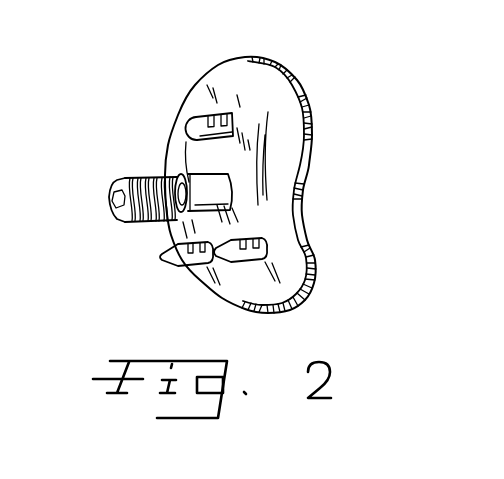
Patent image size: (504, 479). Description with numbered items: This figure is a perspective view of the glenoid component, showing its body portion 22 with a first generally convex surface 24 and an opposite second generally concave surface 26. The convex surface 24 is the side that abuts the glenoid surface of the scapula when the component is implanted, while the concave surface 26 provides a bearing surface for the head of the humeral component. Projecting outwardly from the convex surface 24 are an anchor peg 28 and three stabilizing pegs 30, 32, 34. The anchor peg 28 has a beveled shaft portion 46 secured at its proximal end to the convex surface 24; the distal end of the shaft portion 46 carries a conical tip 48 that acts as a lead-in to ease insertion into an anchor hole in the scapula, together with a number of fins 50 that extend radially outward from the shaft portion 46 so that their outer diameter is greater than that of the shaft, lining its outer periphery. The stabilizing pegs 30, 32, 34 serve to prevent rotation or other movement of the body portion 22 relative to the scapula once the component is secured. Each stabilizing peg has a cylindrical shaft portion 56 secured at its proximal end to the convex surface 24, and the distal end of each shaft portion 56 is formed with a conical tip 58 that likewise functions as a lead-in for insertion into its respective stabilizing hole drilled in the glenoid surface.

The body portion 22 is at (266, 93).
The first generally convex surface 24 is at (277, 178).
The second generally concave surface 26 is at (310, 230).
The anchor peg 28 is at (141, 176).
The stabilizing peg 30 is at (201, 115).
The stabilizing peg 32 is at (163, 257).
The stabilizing peg 34 is at (232, 268).
The beveled shaft portion 46 is at (198, 180).
The conical tip 48 is at (110, 200).
The fins 50 is at (128, 222).
The cylindrical shaft portion 56 is at (218, 116).
The conical tip 58 is at (188, 121).